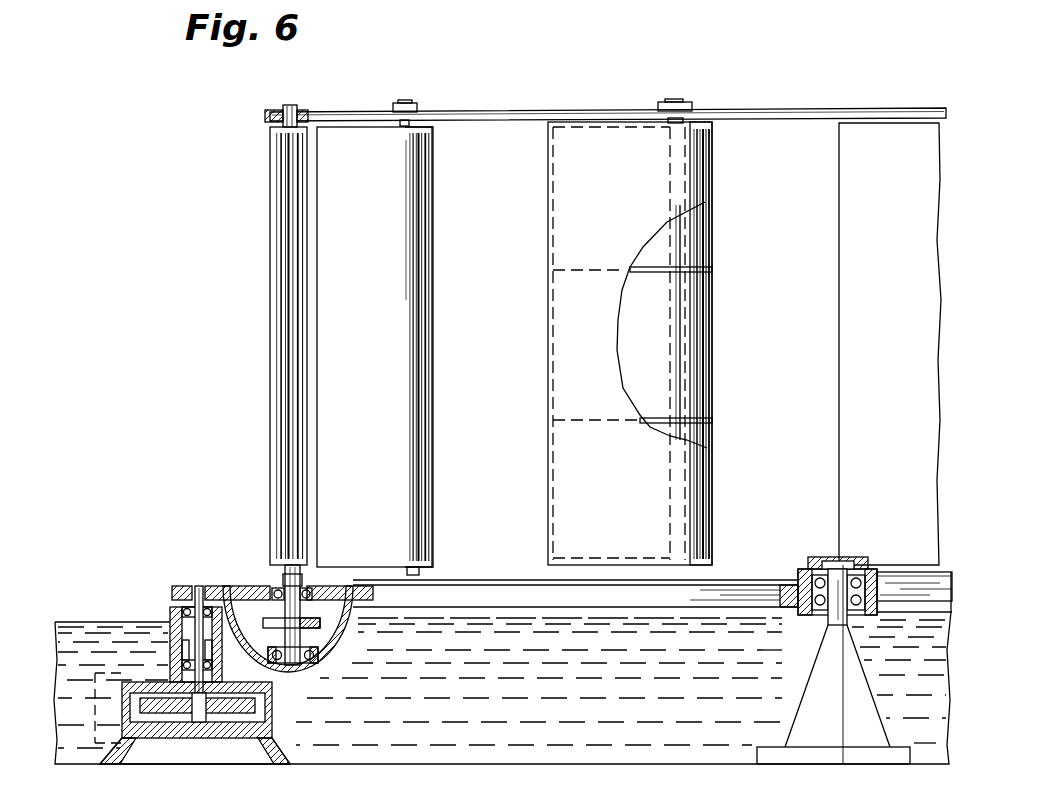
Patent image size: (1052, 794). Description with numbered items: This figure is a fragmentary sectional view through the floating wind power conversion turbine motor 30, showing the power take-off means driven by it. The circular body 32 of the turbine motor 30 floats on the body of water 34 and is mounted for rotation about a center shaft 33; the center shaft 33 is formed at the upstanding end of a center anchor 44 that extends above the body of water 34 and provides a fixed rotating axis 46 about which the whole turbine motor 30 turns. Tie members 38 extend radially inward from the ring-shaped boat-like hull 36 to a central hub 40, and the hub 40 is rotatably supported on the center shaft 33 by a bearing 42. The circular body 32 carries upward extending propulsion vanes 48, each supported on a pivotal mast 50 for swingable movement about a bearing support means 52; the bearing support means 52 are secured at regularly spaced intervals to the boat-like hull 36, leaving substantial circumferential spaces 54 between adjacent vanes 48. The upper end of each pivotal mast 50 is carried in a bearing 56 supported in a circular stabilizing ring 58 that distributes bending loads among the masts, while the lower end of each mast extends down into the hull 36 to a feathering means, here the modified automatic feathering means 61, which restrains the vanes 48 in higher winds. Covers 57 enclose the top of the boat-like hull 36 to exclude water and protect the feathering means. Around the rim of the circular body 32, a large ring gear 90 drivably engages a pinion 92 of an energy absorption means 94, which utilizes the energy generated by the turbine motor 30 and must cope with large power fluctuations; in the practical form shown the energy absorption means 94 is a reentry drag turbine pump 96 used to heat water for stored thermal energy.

The turbine motor 30 is at (207, 193).
The circular body 32 is at (248, 584).
The center shaft 33 is at (853, 558).
The body of water 34 is at (610, 714).
The boat-like hull 36 is at (336, 654).
The tie members 38 is at (497, 594).
The central hub 40 is at (882, 582).
The bearing 42 is at (806, 572).
The center anchor 44 is at (834, 726).
The fixed rotating axis 46 is at (830, 557).
The propulsion vanes 48 is at (272, 337).
The pivotal mast 50 is at (296, 582).
The bearing support means 52 is at (303, 590).
The circumferential spaces 54 is at (510, 239).
The bearing 56 is at (300, 107).
The covers 57 is at (277, 586).
The circular stabilizing ring 58 is at (507, 112).
The modified automatic feathering means 61 is at (322, 622).
The ring gear 90 is at (207, 586).
The pinion 92 is at (185, 588).
The energy absorption means 94 is at (173, 618).
The drag turbine pump 96 is at (274, 714).